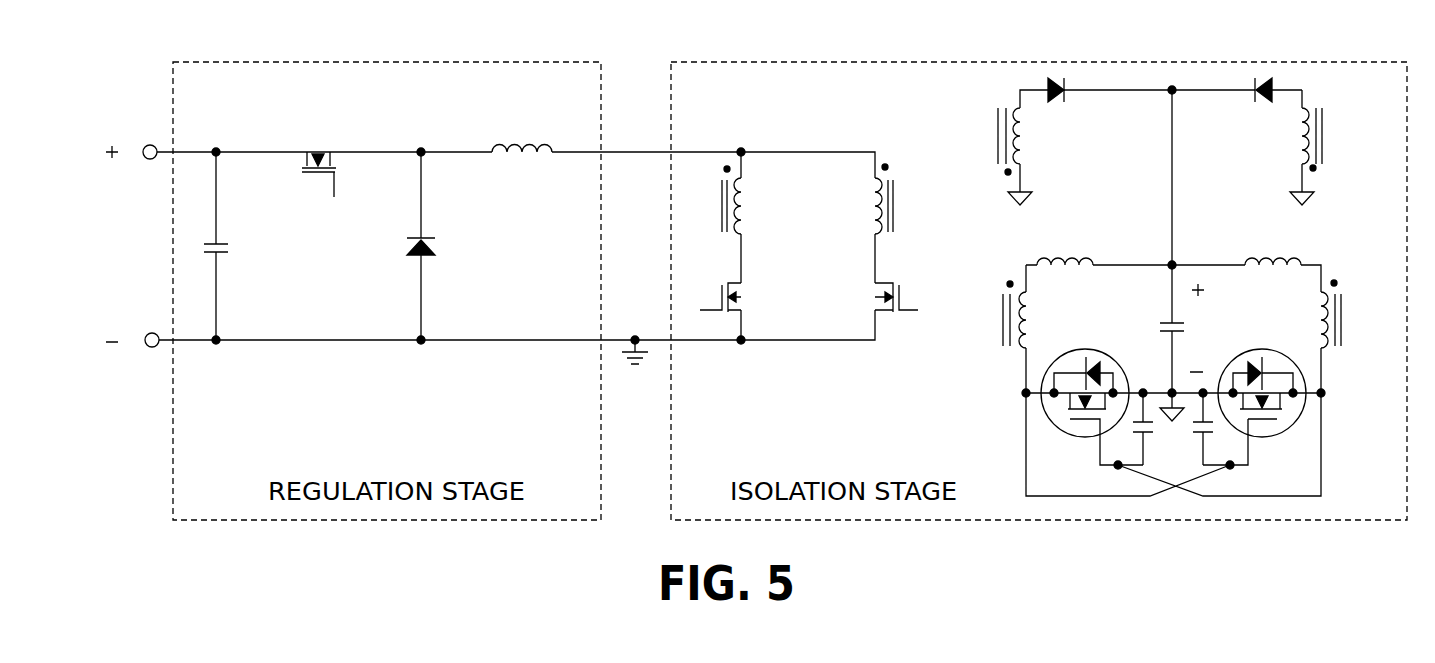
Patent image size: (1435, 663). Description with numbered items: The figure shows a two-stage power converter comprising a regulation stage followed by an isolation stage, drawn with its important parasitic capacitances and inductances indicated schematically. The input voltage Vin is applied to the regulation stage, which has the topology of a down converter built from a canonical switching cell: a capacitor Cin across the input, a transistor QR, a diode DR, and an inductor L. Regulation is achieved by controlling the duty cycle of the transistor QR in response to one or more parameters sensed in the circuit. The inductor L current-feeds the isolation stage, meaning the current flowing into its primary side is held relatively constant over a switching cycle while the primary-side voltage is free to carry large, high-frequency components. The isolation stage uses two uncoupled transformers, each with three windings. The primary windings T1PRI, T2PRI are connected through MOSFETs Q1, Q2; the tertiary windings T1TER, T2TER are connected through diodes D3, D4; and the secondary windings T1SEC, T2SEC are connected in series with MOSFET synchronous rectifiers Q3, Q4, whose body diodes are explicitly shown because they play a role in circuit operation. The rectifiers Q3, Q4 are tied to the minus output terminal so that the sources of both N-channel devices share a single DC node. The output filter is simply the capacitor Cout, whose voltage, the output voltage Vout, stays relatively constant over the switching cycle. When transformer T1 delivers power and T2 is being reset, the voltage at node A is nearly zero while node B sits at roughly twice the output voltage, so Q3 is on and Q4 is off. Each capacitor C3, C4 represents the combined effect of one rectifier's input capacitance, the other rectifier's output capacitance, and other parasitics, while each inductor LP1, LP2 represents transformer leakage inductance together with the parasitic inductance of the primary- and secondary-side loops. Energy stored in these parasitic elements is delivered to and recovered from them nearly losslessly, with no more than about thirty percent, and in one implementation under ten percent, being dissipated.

The input voltage Vin is at (112, 252).
The capacitor Cin is at (234, 246).
The transistor QR is at (309, 180).
The diode DR is at (443, 246).
The inductor L is at (522, 135).
The primary winding T1PRI is at (759, 200).
The primary winding T2PRI is at (917, 199).
The MOSFET Q1 is at (740, 297).
The MOSFET Q2 is at (906, 297).
The tertiary winding T1TER is at (982, 147).
The tertiary winding T2TER is at (1341, 147).
The diode D3 is at (1110, 110).
The diode D4 is at (1237, 110).
The parasitic inductor LP1 is at (1066, 242).
The parasitic inductor LP2 is at (1273, 241).
The secondary winding T1SEC is at (975, 321).
The secondary winding T2SEC is at (1362, 314).
The capacitor Cout is at (1121, 343).
The output voltage Vout is at (1222, 328).
The MOSFET synchronous rectifier Q3 is at (1097, 406).
The MOSFET synchronous rectifier Q4 is at (1254, 398).
The parasitic capacitor C3 is at (1133, 429).
The parasitic capacitor C4 is at (1213, 429).
The node A is at (1012, 395).
The node B is at (1333, 395).